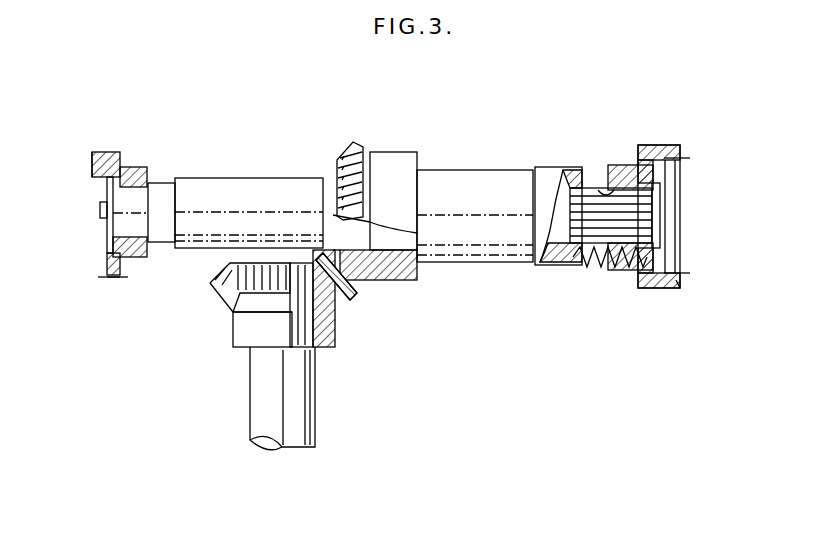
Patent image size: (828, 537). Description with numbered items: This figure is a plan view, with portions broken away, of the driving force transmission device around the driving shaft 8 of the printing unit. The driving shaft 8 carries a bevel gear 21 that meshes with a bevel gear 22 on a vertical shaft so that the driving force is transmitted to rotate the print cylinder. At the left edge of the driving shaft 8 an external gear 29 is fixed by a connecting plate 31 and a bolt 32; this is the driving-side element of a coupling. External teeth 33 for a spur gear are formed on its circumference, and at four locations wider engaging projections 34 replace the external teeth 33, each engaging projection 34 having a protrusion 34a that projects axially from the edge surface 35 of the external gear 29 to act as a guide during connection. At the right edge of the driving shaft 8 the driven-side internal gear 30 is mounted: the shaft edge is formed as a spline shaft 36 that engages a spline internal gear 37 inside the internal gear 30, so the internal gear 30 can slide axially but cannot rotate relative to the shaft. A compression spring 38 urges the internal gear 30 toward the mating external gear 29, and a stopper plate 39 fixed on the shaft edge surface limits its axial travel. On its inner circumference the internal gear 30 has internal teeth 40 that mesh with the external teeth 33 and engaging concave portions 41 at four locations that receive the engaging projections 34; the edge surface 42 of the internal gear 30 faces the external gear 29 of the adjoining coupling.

The driving shaft 8 is at (463, 170).
The bevel gear 21 is at (353, 142).
The bevel gear 22 is at (210, 283).
The external gear 29 is at (121, 147).
The internal gear 30 is at (620, 165).
The connecting plate 31 is at (107, 232).
The bolt 32 is at (100, 206).
The external teeth 33 is at (112, 280).
The engaging projections 34 is at (103, 152).
The protrusions 34a is at (92, 158).
The edge surface 35 is at (107, 262).
The spline shaft 36 is at (575, 262).
The spline internal gear 37 is at (600, 190).
The compression spring 38 is at (595, 268).
The stopper plate 39 is at (658, 213).
The internal teeth 40 is at (670, 273).
The engaging concave portions 41 is at (668, 160).
The edge surface 42 is at (680, 284).